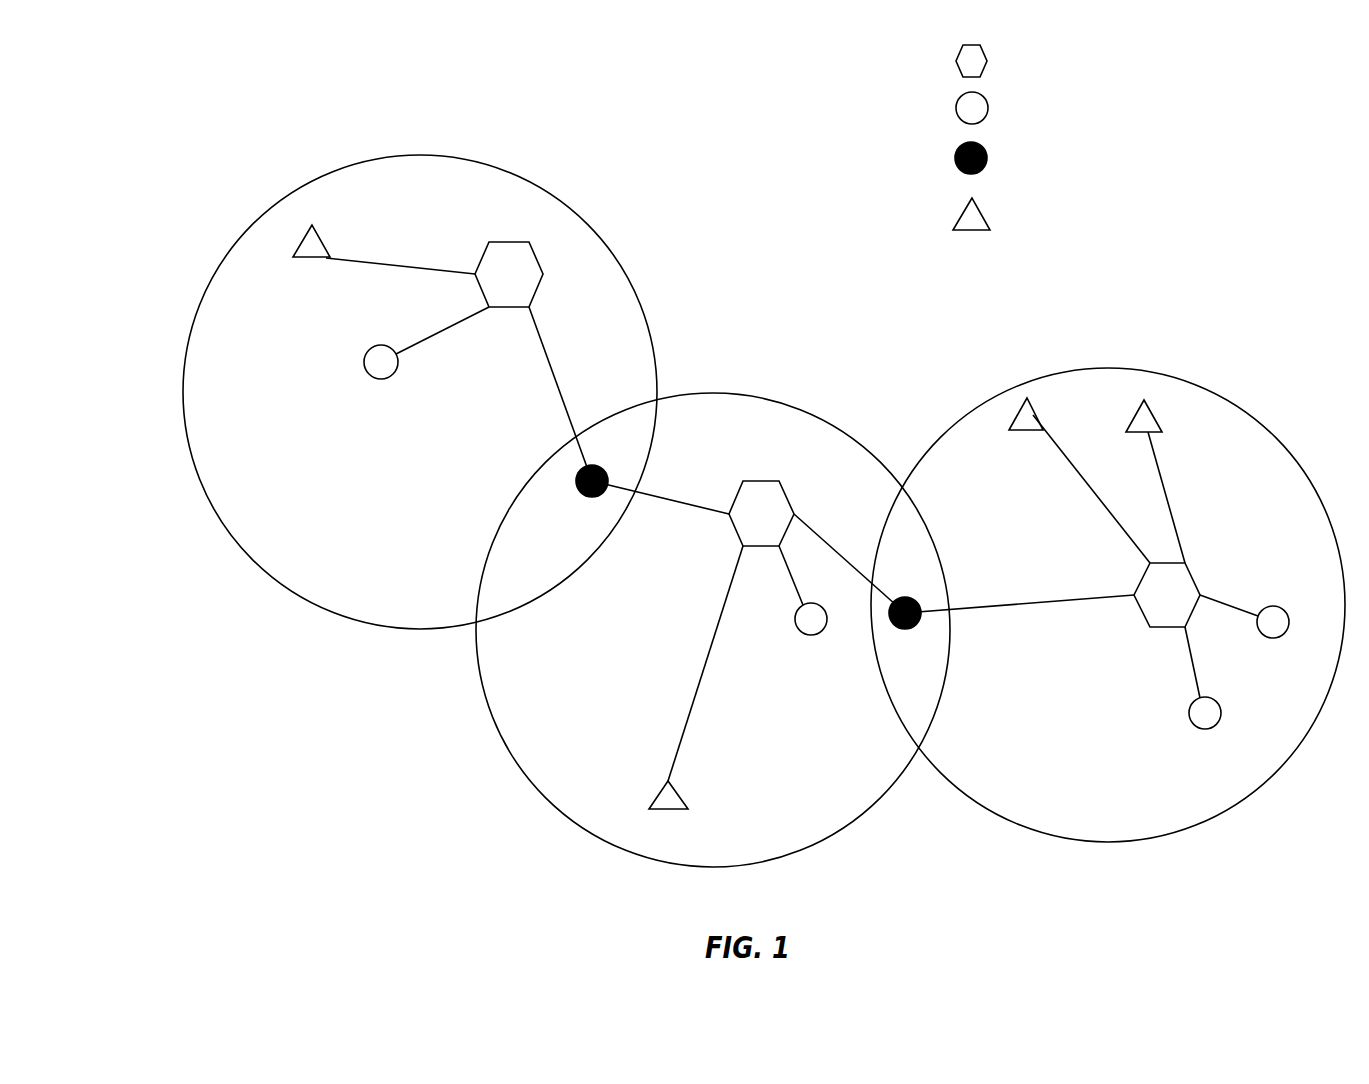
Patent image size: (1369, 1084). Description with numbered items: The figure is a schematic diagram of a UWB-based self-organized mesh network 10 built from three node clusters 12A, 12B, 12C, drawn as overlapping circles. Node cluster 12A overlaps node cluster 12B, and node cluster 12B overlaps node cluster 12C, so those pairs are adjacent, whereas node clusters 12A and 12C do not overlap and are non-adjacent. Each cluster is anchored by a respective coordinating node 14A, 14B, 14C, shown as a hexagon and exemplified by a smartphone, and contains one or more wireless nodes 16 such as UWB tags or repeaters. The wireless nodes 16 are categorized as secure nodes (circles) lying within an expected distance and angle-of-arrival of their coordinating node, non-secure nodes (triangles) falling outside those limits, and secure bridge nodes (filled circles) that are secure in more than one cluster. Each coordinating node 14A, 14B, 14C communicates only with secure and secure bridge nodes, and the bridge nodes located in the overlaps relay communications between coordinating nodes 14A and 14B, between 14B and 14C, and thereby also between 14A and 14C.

The self-organized mesh network 10 is at (181, 177).
The node cluster 12A is at (382, 533).
The node cluster 12B is at (619, 711).
The node cluster 12C is at (1085, 760).
The coordinating node 14A is at (526, 287).
The coordinating node 14B is at (780, 527).
The coordinating node 14C is at (1186, 608).
The wireless node 16 is at (1302, 578).